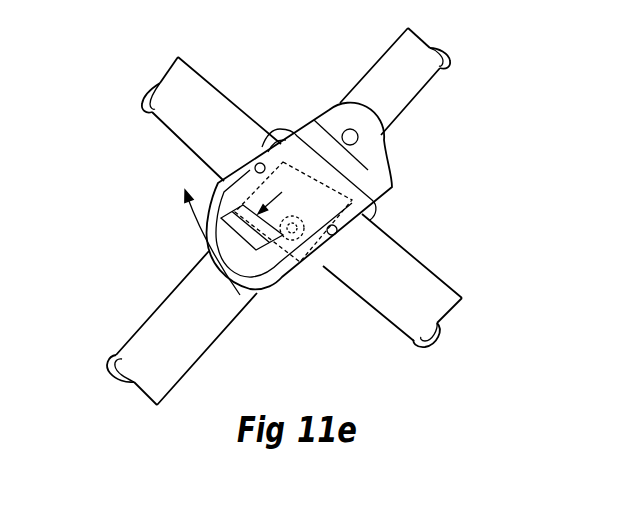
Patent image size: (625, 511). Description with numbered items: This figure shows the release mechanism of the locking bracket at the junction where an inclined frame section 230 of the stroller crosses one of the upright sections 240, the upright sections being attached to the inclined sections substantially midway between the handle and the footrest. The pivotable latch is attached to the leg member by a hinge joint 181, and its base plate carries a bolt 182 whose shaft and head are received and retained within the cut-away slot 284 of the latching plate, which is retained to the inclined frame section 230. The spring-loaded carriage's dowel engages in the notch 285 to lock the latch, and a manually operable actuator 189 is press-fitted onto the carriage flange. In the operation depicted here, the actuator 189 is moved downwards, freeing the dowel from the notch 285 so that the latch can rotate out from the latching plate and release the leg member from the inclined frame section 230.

The inclined section 230 is at (190, 93).
The upright section 240 is at (190, 305).
The hinge joint 181 is at (348, 136).
The bolt 182 is at (302, 224).
The cut-away slot 284 is at (247, 197).
The notch 285 is at (222, 248).
The manually operable actuator 189 is at (273, 243).